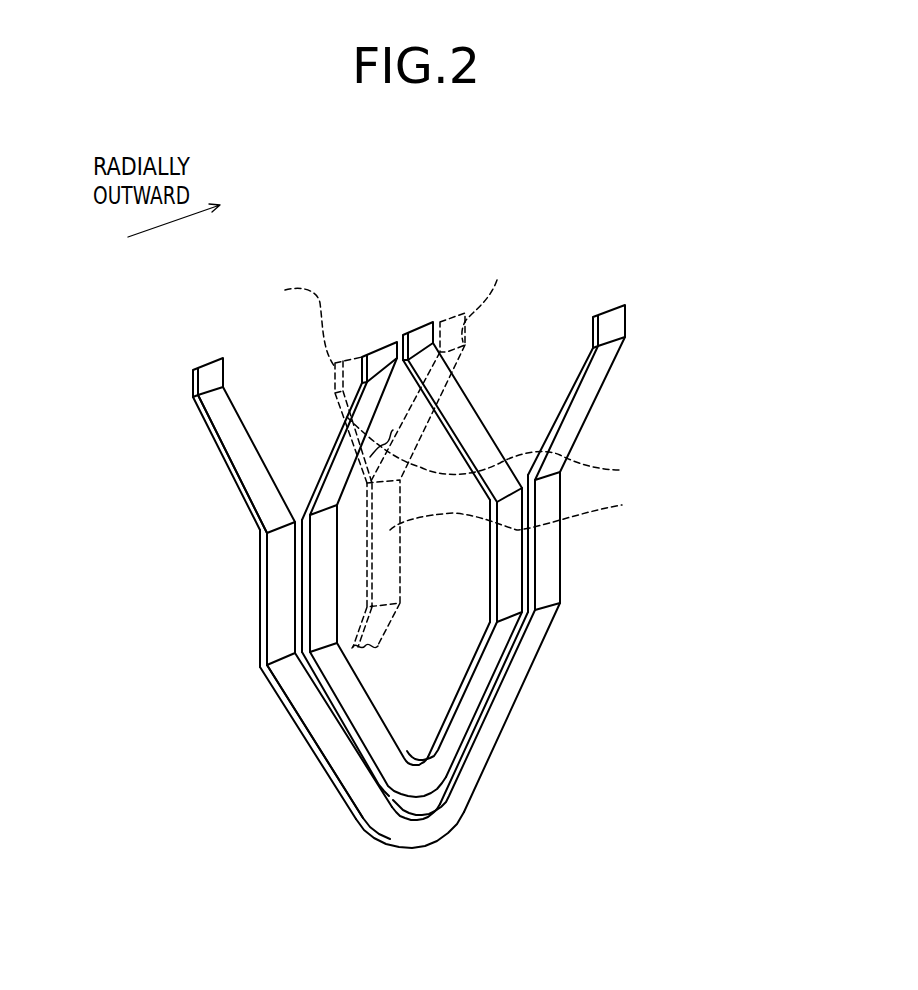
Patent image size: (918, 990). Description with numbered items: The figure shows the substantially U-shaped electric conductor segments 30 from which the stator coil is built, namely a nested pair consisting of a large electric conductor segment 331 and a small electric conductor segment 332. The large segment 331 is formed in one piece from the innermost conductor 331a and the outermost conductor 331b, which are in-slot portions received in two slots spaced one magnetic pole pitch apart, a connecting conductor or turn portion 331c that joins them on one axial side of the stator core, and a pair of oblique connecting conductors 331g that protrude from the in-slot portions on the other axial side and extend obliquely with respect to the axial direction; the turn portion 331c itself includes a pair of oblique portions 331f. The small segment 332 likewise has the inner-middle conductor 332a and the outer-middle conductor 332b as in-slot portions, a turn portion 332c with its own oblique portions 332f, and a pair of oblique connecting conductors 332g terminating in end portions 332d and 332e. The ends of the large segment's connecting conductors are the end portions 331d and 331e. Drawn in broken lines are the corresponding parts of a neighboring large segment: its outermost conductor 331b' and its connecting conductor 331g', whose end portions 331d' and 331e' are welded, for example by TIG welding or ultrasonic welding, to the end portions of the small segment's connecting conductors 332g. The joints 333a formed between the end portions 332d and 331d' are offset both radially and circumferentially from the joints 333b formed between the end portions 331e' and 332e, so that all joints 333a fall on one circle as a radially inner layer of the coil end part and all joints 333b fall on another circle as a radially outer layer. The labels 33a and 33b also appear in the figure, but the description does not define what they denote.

The electric conductor segment 30 is at (329, 827).
The first bent portion 33a is at (282, 776).
The second bent portion 33b is at (203, 461).
The large electric conductor segment 331 is at (415, 601).
The innermost conductor 331a is at (278, 557).
The outermost conductor 331b is at (590, 642).
The connecting conductor 331c is at (400, 838).
The end portion 331d is at (139, 400).
The end portion 331e is at (684, 298).
The oblique portion 331f is at (302, 722).
The connecting conductor 331g is at (417, 429).
The end portion 331d' is at (262, 319).
The end portion 331e' is at (513, 297).
The connecting conductor 331g' is at (531, 451).
The outermost conductor 331b' is at (552, 515).
The small electric conductor segment 332 is at (422, 542).
The inner-middle conductor 332a is at (325, 610).
The outer-middle conductor 332b is at (508, 602).
The connecting conductor 332c is at (408, 783).
The end portion 332d is at (385, 352).
The end portion 332e is at (420, 335).
The oblique portion 332f is at (467, 702).
The connecting conductor 332g is at (338, 470).
The joint 333a is at (350, 324).
The joint 333b is at (442, 281).